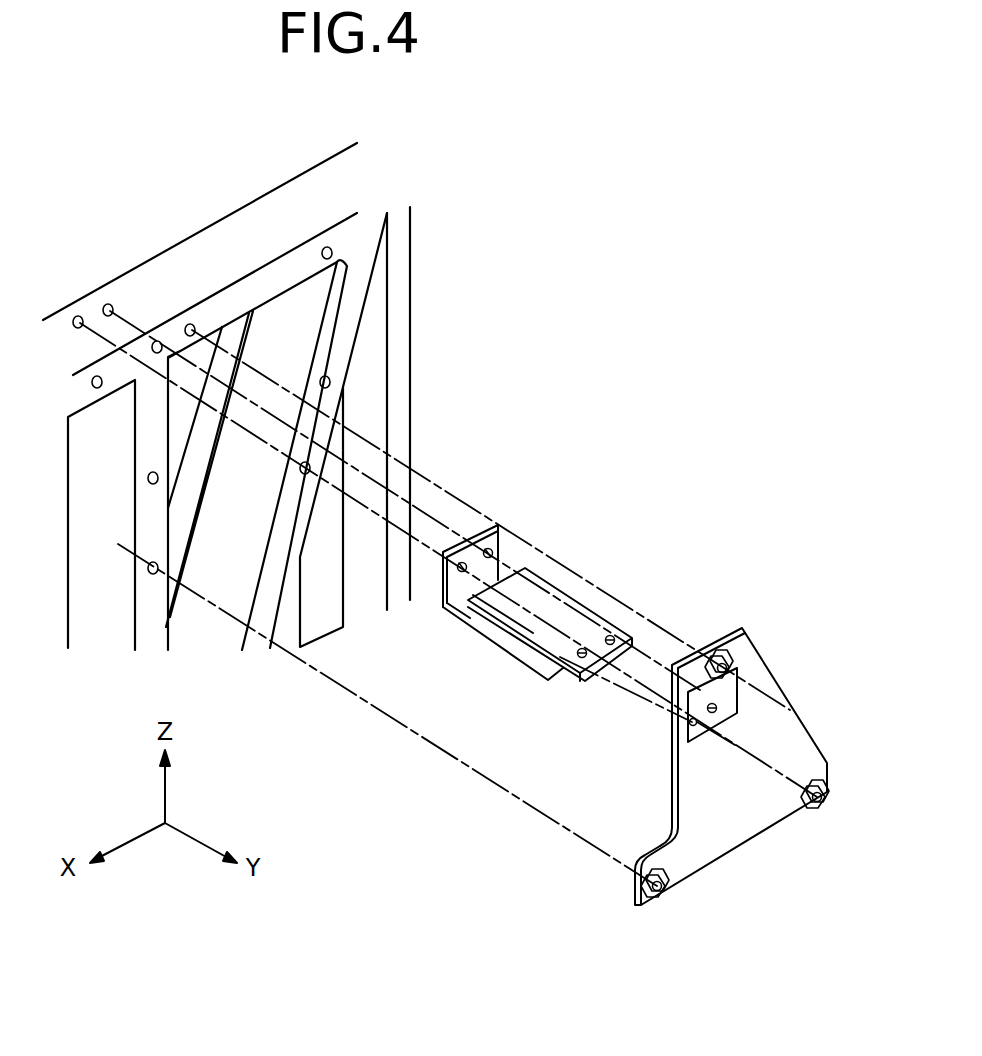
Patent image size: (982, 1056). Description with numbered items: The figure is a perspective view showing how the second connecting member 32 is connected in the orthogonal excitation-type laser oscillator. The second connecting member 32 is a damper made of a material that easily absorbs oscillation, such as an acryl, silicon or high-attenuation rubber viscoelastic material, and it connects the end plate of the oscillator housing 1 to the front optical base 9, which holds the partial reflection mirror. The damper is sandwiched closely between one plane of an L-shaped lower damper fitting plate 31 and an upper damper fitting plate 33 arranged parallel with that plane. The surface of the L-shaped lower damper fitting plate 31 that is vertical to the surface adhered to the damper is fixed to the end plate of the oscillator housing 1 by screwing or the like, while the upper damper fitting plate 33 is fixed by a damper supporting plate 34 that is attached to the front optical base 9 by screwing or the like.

The oscillator housing 1 is at (310, 190).
The front optical base 9 is at (348, 347).
The L-shaped lower damper fitting plate 31 is at (442, 577).
The second connecting member 32 is at (518, 638).
The upper damper fitting plate 33 is at (585, 606).
The damper supporting plate 34 is at (808, 743).